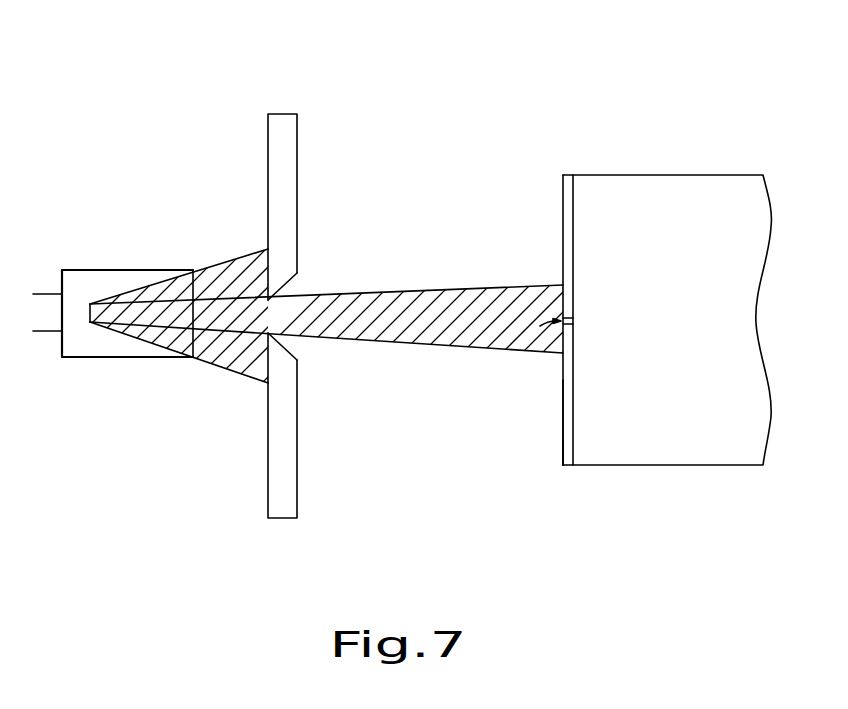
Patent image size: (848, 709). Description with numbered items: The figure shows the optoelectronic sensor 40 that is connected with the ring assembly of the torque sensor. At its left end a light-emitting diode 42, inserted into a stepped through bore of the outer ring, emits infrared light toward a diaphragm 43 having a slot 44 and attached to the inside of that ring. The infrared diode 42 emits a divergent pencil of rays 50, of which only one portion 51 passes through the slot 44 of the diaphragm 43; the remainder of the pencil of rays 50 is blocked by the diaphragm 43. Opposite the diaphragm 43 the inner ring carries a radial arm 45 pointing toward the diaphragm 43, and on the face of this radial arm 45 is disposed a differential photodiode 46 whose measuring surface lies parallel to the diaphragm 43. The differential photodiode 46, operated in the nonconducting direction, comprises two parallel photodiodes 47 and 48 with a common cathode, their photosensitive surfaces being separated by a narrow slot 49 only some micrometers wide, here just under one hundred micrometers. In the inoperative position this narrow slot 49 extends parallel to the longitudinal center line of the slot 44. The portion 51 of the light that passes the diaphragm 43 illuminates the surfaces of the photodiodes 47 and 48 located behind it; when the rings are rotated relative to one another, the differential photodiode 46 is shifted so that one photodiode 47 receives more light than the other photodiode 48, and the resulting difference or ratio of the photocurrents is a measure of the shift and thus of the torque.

The optoelectronic sensor 40 is at (492, 99).
The light-emitting diode 42 is at (95, 273).
The diaphragm 43 is at (290, 161).
The slot 44 is at (275, 318).
The radial arm 45 is at (634, 187).
The differential photodiode 46 is at (540, 459).
The photodiode 47 is at (563, 222).
The photodiode 48 is at (560, 403).
The narrow slot 49 is at (523, 350).
The pencil of rays 50 is at (222, 370).
The portion 51 is at (423, 288).